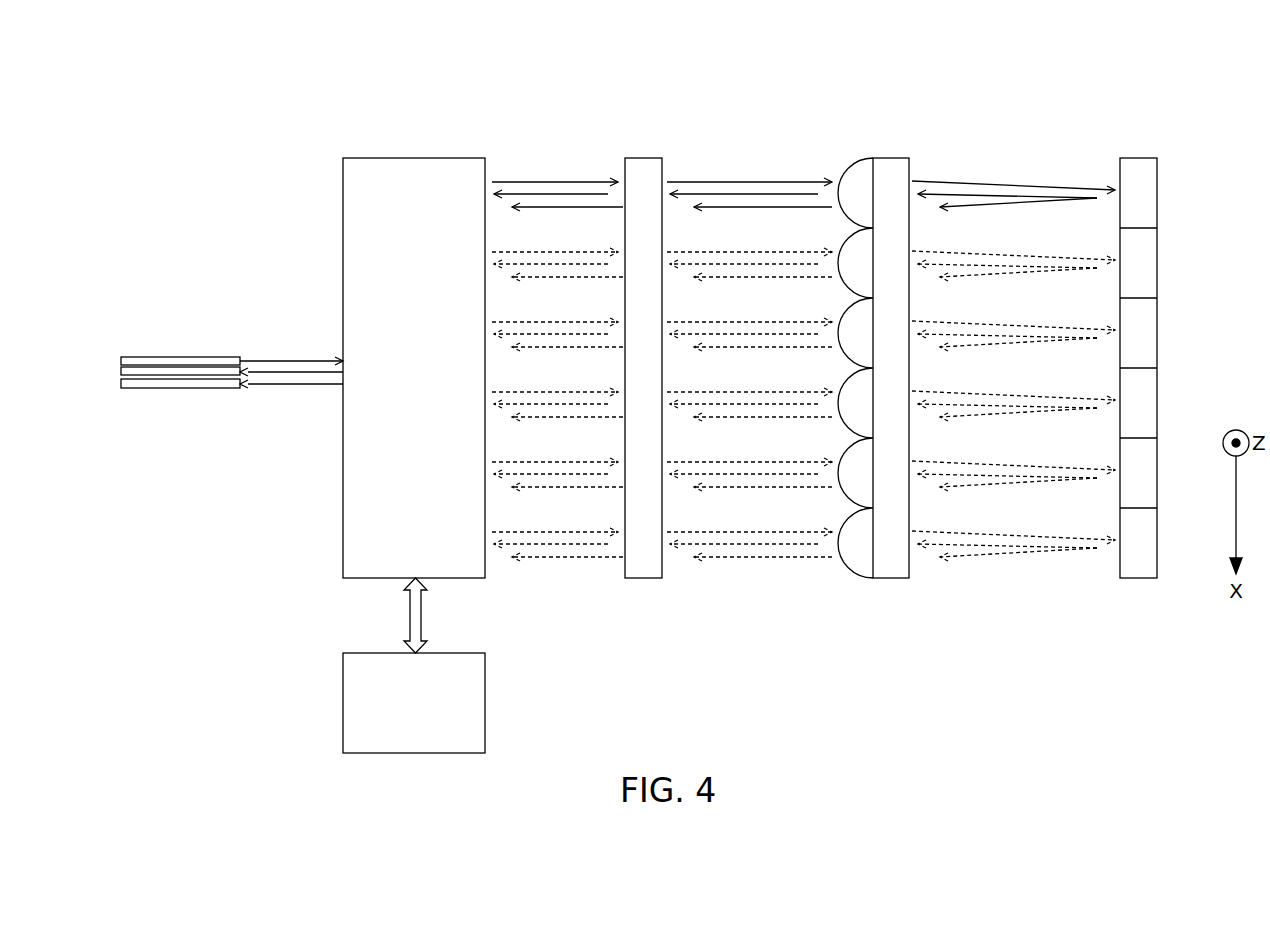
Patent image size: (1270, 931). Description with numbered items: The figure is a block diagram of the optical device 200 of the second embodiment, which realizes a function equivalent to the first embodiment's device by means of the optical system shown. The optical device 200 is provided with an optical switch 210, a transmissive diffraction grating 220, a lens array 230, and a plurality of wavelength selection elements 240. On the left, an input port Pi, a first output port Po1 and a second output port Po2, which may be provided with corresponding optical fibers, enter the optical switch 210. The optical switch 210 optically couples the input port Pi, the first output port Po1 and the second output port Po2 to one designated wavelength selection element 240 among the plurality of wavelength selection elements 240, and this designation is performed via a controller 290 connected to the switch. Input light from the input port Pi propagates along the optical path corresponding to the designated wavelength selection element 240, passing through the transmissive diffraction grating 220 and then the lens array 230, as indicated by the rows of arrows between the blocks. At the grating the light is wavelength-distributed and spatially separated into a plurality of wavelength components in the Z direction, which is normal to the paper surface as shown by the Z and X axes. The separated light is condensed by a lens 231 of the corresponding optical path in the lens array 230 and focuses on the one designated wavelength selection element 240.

The optical device 200 is at (318, 133).
The optical switch 210 is at (426, 158).
The transmissive diffraction grating 220 is at (648, 158).
The lens array 230 is at (897, 158).
The lens 231 is at (855, 168).
The wavelength selection element 240 is at (1160, 196).
The controller 290 is at (343, 727).
The input port Pi is at (200, 357).
The first output port Po1 is at (121, 371).
The second output port Po2 is at (121, 386).